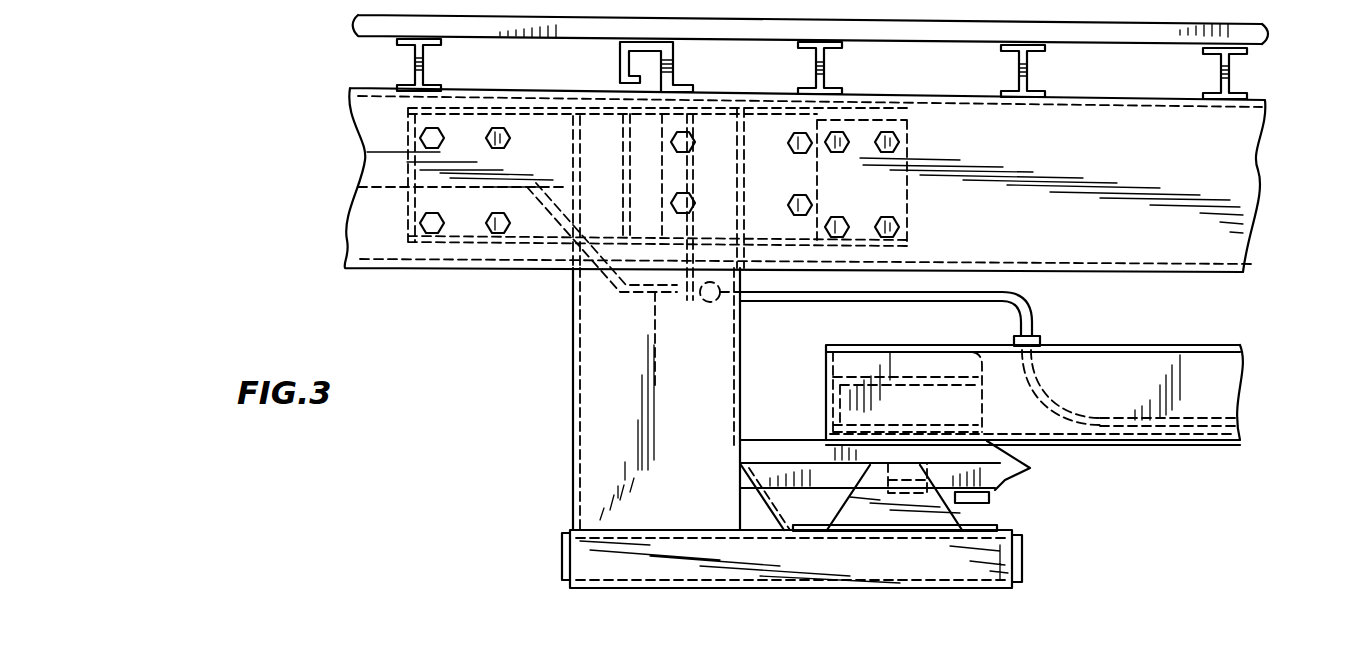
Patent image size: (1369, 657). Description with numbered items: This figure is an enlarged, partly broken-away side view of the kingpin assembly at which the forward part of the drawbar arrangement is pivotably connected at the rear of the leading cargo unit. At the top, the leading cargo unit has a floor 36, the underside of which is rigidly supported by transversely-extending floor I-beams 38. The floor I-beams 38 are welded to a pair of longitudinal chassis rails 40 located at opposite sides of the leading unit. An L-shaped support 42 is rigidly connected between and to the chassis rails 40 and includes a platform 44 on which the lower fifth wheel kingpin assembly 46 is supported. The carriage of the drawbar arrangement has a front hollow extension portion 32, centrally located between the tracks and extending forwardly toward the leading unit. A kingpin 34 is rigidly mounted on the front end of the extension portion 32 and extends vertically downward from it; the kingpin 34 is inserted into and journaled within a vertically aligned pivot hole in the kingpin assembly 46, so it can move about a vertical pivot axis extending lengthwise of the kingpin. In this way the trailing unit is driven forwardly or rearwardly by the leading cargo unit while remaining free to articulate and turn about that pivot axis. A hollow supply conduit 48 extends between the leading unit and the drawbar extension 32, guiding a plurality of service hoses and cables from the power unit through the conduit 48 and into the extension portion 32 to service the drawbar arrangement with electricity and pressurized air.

The front hollow extension portion 32 is at (1213, 332).
The kingpin 34 is at (826, 440).
The floor 36 is at (1262, 37).
The floor I-beams 38 is at (1054, 70).
The longitudinal chassis rails 40 is at (1282, 167).
The L-shaped support 42 is at (575, 381).
The platform 44 is at (1022, 553).
The fifth wheel kingpin assembly 46 is at (1002, 482).
The hollow supply conduit 48 is at (918, 302).